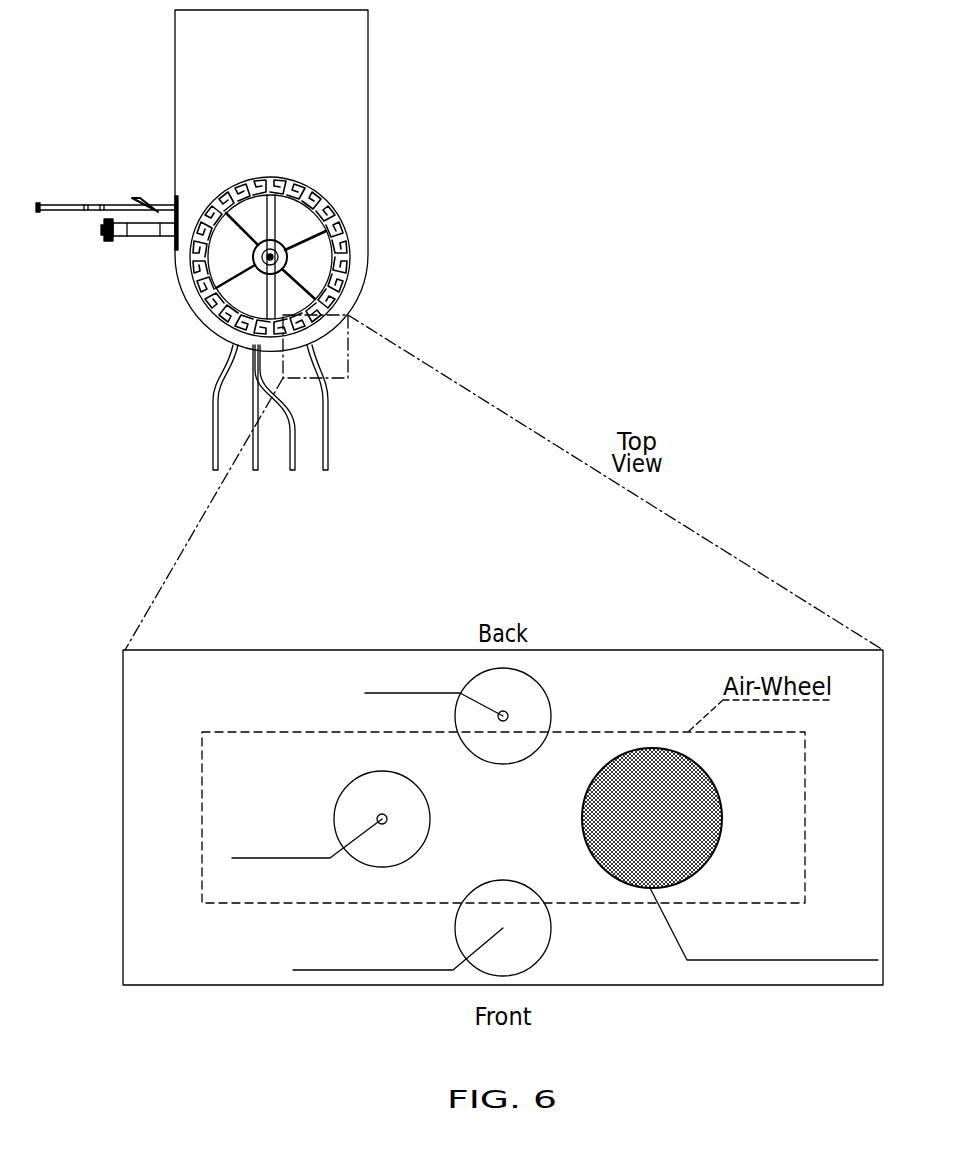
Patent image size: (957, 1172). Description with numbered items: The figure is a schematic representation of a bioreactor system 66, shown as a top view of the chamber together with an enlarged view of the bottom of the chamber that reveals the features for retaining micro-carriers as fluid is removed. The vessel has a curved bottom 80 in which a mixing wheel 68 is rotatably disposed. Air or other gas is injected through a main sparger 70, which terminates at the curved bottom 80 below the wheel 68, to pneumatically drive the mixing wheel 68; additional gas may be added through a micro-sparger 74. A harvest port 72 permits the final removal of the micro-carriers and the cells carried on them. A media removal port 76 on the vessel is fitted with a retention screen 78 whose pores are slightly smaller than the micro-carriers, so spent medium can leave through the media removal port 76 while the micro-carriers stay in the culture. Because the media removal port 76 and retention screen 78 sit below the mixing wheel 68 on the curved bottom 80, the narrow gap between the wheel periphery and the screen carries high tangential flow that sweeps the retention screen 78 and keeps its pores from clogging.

The bioreactor system 66 is at (418, 128).
The mixing wheel 68 is at (350, 248).
The main sparger 70 is at (212, 442).
The harvest port 72 is at (257, 470).
The micro-sparger 74 is at (291, 472).
The media removal port 76 is at (330, 450).
The retention screen 78 is at (722, 802).
The curved bottom 80 is at (207, 321).